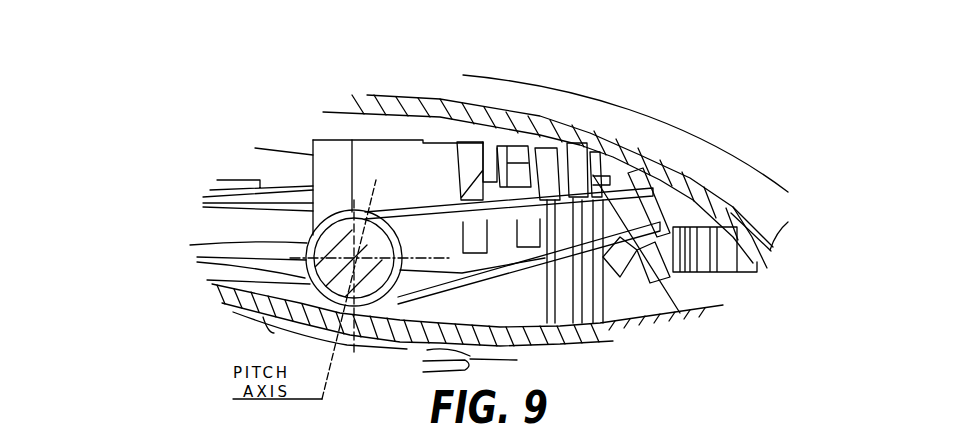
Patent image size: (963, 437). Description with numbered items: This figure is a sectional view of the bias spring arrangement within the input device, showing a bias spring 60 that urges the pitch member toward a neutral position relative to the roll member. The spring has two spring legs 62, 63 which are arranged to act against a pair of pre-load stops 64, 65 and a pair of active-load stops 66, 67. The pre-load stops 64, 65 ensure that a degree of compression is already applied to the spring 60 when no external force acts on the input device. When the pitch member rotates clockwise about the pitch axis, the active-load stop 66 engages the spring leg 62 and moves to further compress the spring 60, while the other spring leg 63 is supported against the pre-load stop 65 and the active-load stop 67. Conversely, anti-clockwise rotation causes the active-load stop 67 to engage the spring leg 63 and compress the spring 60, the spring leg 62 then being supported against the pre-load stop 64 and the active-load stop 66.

The bias spring 60 is at (360, 212).
The spring leg 62 is at (650, 195).
The spring leg 63 is at (672, 307).
The pre-load stop 64 is at (590, 170).
The pre-load stop 65 is at (567, 327).
The active-load stop 66 is at (513, 163).
The active-load stop 67 is at (655, 237).